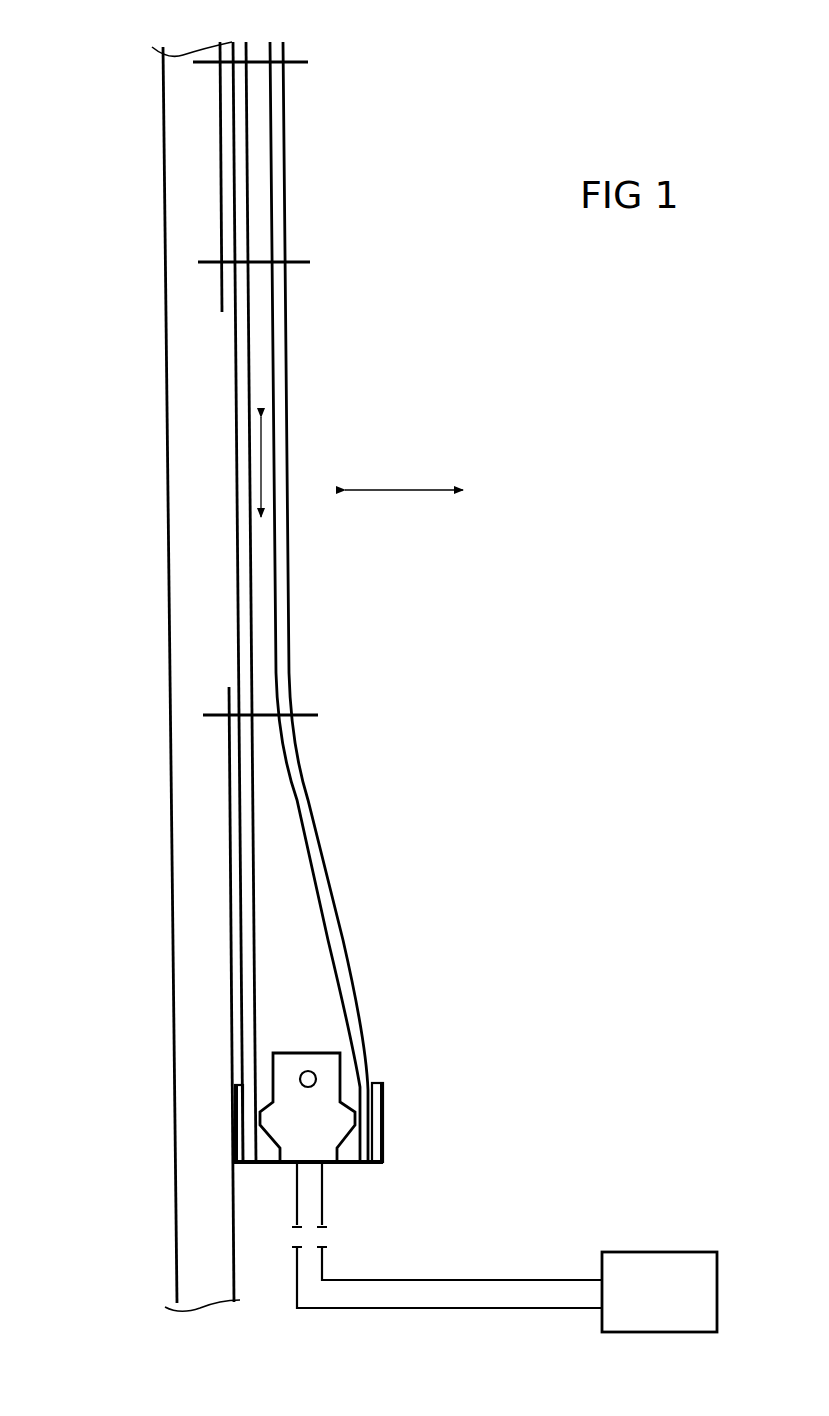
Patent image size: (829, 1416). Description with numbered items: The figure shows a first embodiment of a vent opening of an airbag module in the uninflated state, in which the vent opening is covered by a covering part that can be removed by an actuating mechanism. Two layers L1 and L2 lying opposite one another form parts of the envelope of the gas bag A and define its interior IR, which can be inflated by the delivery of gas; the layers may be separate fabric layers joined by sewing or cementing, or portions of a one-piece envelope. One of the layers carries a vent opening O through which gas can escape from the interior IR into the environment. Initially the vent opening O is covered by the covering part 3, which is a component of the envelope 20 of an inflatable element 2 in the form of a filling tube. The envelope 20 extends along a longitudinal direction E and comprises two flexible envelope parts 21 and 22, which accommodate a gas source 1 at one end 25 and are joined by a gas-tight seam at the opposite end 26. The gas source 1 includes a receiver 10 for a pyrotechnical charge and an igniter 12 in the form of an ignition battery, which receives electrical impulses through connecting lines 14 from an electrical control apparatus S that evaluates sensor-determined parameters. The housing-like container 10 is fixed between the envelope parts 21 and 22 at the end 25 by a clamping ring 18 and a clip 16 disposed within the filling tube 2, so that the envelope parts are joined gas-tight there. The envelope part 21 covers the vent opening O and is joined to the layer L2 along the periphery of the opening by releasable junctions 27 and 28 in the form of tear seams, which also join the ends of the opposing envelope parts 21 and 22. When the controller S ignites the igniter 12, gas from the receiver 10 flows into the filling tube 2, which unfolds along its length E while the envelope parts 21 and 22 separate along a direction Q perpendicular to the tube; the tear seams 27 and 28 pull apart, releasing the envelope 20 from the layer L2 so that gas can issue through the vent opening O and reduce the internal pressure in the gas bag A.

The gas source 1 is at (280, 1097).
The inflatable element 2 is at (349, 602).
The covering part 3 is at (236, 360).
The receiver 10 is at (296, 1052).
The igniter 12 is at (316, 1073).
The connecting lines 14 is at (323, 1215).
The clip 16 is at (268, 1150).
The clamping ring 18 is at (234, 1095).
The envelope 20 is at (283, 533).
The envelope part 21 is at (240, 427).
The envelope part 22 is at (290, 372).
The one end 25 is at (353, 1165).
The opposite end 26 is at (297, 58).
The releasable junction 27 is at (305, 262).
The releasable junction 28 is at (308, 717).
The gas bag A is at (172, 838).
The longitudinal direction E is at (263, 462).
The direction perpendicular to the longitudinal direction Q is at (404, 478).
The vent opening O is at (220, 305).
The interior IR is at (218, 910).
The layer L1 is at (168, 553).
The layer L2 is at (229, 755).
The electrical control apparatus S is at (682, 1268).